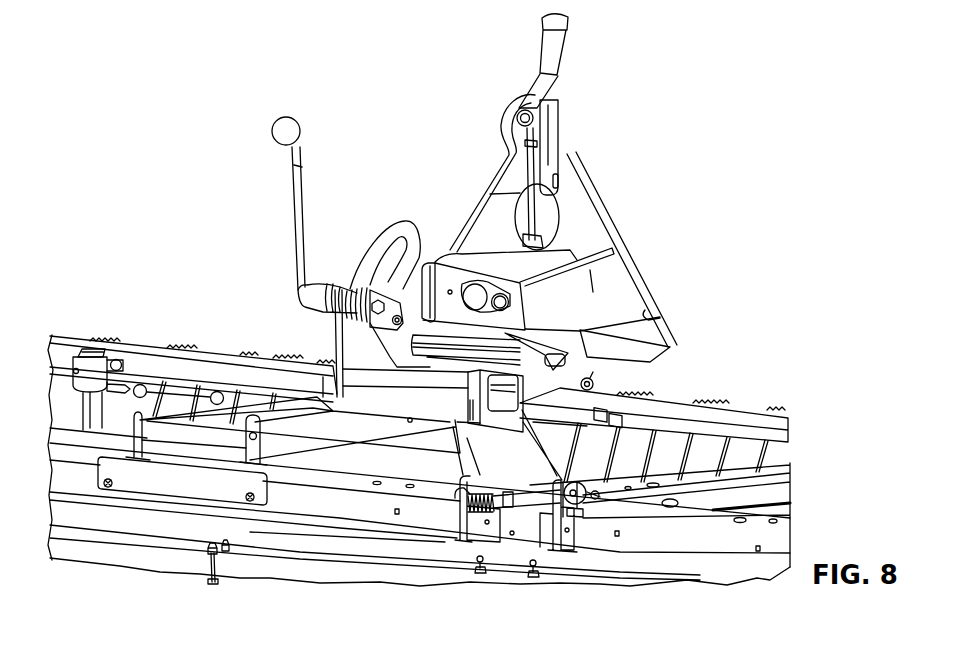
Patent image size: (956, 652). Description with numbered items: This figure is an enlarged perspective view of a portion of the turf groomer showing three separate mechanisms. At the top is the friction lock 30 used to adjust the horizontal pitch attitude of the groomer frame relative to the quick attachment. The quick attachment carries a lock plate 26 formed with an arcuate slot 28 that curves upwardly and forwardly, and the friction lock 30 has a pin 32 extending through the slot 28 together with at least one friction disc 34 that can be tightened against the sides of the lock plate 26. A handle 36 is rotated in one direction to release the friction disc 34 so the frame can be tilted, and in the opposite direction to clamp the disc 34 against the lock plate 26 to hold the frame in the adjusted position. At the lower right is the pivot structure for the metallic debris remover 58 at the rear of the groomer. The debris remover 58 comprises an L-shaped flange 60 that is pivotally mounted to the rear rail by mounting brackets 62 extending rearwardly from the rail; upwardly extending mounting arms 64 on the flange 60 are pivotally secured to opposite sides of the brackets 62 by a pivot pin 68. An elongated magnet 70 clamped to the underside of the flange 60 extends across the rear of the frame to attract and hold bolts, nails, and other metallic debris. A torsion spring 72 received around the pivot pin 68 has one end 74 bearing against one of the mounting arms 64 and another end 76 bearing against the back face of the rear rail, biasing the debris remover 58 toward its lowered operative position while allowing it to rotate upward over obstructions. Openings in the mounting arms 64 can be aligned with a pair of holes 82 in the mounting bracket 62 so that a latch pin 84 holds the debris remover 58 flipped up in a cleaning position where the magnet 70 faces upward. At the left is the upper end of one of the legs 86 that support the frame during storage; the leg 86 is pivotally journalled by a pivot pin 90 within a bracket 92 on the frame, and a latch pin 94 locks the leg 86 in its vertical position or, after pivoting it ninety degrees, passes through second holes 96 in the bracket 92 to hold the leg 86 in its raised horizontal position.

The lock plate 26 is at (408, 221).
The arcuate slot 28 is at (398, 250).
The friction lock 30 is at (326, 232).
The pin 32 is at (381, 299).
The friction disc 34 is at (357, 303).
The handle 36 is at (298, 153).
The metallic debris remover 58 is at (341, 508).
The L-shaped flange 60 is at (180, 527).
The mounting brackets 62 is at (599, 493).
The mounting arms 64 is at (463, 517).
The pivot pin 68 is at (513, 512).
The elongated magnet 70 is at (123, 558).
The torsion spring 72 is at (485, 490).
The end of torsion spring 74 is at (458, 540).
The end of torsion spring 76 is at (508, 533).
The holes 82 is at (465, 490).
The latch pin 84 is at (553, 490).
The leg 86 is at (93, 405).
The pivot pin 90 is at (120, 362).
The bracket 92 is at (90, 350).
The latch pin 94 is at (113, 383).
The second holes 96 is at (74, 375).